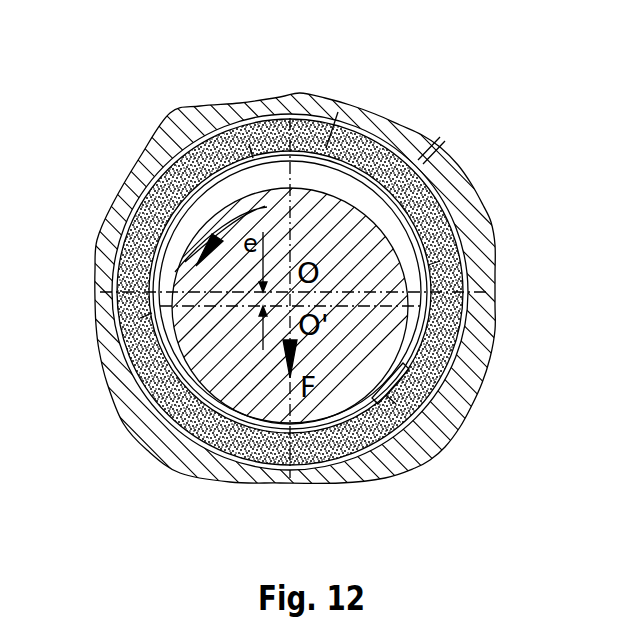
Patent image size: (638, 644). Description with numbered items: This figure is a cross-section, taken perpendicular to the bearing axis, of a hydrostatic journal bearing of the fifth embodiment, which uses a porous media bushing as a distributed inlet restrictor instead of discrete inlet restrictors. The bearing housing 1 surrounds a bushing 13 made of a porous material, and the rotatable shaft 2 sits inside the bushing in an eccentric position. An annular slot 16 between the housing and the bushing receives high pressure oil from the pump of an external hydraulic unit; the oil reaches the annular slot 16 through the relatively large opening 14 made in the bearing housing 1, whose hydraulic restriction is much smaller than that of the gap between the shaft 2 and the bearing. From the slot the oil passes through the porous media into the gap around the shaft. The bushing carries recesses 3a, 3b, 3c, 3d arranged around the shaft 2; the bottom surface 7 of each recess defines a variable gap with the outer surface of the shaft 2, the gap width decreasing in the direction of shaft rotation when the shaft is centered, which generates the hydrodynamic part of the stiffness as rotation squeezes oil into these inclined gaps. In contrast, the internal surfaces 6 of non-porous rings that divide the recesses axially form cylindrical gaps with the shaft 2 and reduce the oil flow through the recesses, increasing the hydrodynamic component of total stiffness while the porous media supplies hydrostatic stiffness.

The bearing housing 1 is at (385, 128).
The rotatable shaft 2 is at (247, 423).
The recess 3a is at (428, 265).
The recess 3b is at (253, 158).
The recess 3c is at (152, 313).
The recess 3d is at (430, 457).
The bushing 13 is at (327, 145).
The opening 14 is at (445, 165).
The annular slot 16 is at (430, 248).
The internal surface of ring 6 is at (405, 364).
The bottom surface of recess 7 is at (380, 402).